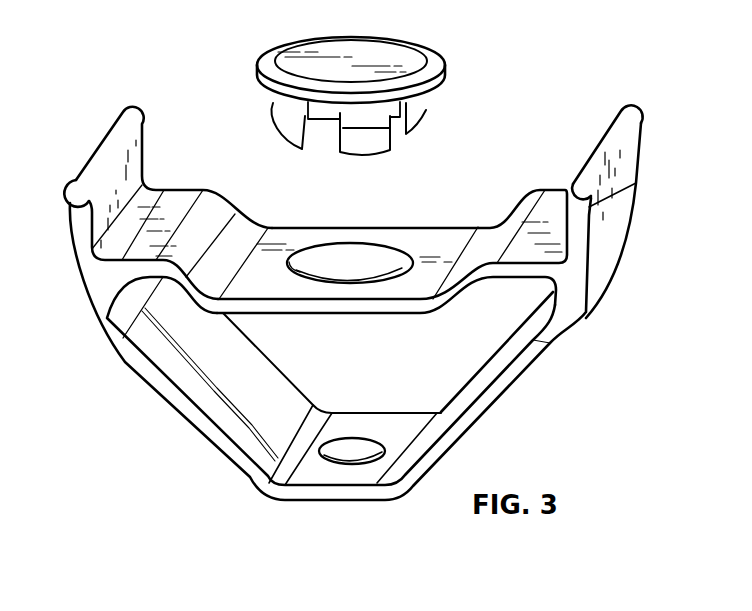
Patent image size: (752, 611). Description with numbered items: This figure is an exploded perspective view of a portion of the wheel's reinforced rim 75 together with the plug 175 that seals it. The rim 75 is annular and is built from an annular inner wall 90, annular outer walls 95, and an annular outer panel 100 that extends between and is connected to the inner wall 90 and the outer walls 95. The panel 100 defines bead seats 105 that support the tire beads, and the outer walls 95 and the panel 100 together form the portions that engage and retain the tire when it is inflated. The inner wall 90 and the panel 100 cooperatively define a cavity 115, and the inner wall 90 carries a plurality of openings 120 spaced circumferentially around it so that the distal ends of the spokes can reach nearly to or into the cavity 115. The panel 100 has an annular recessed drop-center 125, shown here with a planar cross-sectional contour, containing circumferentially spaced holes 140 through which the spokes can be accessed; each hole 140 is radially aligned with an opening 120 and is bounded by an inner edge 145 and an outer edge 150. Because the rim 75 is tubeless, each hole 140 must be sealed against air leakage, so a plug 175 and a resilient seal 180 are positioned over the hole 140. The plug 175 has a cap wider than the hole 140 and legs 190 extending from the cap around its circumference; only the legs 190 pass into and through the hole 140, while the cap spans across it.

The reinforced rim 75 is at (158, 90).
The annular inner wall 90 is at (525, 361).
The annular outer walls 95 is at (633, 164).
The annular outer panel 100 is at (146, 262).
The bead seats 105 is at (160, 200).
The cavity 115 is at (520, 312).
The openings 120 is at (345, 446).
The drop-center 125 is at (433, 237).
The holes 140 is at (357, 248).
The inner edge 145 is at (340, 258).
The outer edge 150 is at (302, 257).
The plug 175 is at (392, 38).
The seal 180 is at (411, 97).
The legs 190 is at (378, 148).